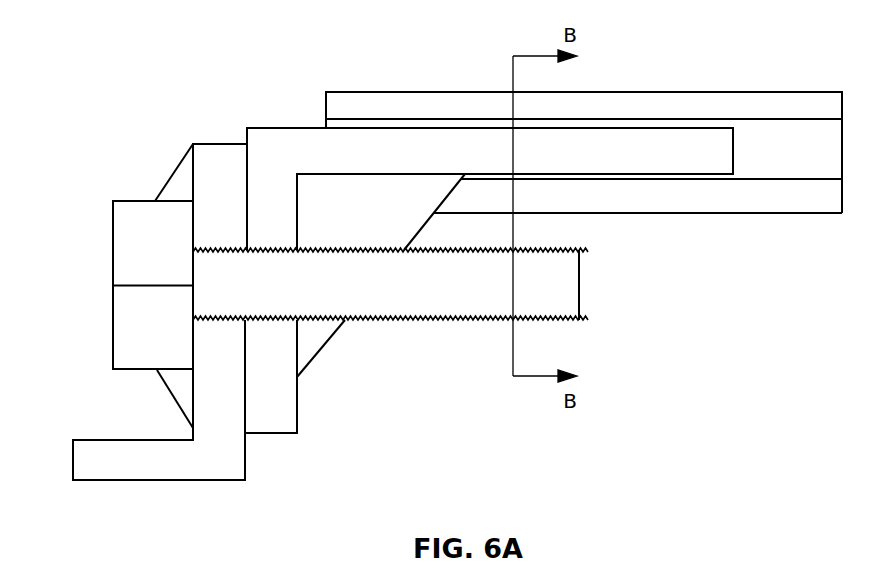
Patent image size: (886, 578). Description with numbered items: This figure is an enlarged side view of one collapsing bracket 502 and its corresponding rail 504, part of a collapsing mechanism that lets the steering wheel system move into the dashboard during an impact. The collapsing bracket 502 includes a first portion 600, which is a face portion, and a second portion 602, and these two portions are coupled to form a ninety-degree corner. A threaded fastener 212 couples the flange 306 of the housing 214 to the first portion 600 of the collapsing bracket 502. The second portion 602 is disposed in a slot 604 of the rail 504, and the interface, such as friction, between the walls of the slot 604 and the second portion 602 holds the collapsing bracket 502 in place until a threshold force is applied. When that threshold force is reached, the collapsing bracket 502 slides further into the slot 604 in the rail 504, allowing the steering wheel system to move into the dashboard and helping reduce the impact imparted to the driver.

The threaded fastener 212 is at (125, 230).
The housing 214 is at (142, 452).
The flange 306 is at (213, 189).
The collapsing bracket 502 is at (279, 143).
The rail 504 is at (438, 97).
The first portion 600 is at (277, 369).
The second portion 602 is at (680, 143).
The slot 604 is at (786, 128).